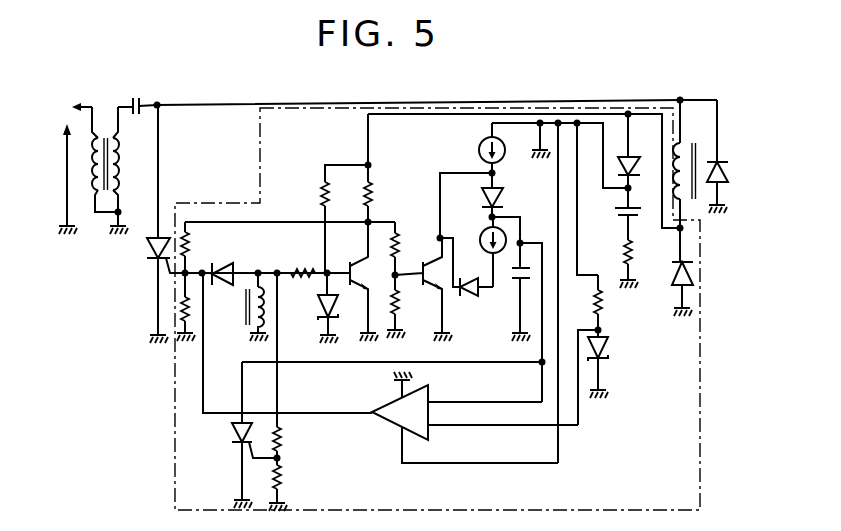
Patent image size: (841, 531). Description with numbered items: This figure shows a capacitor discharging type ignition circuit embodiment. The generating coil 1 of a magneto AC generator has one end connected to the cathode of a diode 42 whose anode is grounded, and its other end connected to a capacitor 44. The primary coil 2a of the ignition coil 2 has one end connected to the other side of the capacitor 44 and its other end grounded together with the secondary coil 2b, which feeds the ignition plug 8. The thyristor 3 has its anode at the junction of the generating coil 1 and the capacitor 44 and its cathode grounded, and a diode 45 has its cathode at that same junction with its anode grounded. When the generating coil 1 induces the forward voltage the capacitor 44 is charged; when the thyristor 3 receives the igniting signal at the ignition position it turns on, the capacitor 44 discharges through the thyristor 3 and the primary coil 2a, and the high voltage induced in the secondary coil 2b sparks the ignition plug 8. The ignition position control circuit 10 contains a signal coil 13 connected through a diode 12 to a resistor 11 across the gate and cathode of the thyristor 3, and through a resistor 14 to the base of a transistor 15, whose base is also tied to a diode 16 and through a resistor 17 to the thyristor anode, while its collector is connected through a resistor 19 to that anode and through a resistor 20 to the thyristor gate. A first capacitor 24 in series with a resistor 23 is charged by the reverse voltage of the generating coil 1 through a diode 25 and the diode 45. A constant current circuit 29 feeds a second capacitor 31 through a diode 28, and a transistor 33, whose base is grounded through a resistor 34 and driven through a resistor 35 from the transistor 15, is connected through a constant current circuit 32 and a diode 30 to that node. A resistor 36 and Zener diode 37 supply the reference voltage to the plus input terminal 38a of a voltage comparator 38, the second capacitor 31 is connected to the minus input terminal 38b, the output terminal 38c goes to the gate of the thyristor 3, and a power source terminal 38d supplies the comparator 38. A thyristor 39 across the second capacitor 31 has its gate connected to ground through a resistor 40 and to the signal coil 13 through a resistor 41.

The generating coil 1 is at (687, 145).
The ignition coil 2 is at (105, 124).
The primary coil 2a is at (118, 170).
The secondary coil 2b is at (95, 175).
The thyristor 3 is at (150, 250).
The ignition plug 8 is at (63, 113).
The ignition position control circuit 10 is at (701, 452).
The resistor 11 is at (178, 308).
The diode 12 is at (234, 265).
The signal coil 13 is at (253, 330).
The resistor 14 is at (298, 268).
The NPN transistor 15 is at (352, 281).
The diode 16 is at (319, 310).
The resistor 17 is at (320, 200).
The resistor 19 is at (375, 193).
The resistor 20 is at (189, 242).
The resistor 23 is at (637, 252).
The first capacitor 24 is at (615, 212).
The diode 25 is at (637, 155).
The diode 28 is at (505, 192).
The constant current circuit 29 is at (479, 146).
The diode 30 is at (473, 278).
The second capacitor 31 is at (514, 282).
The constant current circuit 32 is at (482, 230).
The NPN transistor 33 is at (445, 298).
The resistor 34 is at (400, 302).
The resistor 35 is at (403, 247).
The resistor 36 is at (605, 307).
The Zener diode 37 is at (609, 357).
The voltage comparator 38 is at (392, 413).
The plus input terminal 38a is at (453, 427).
The minus input terminal 38b is at (462, 398).
The output terminal 38c is at (307, 417).
The power source terminal 38d is at (400, 455).
The thyristor 39 is at (235, 438).
The resistor 40 is at (287, 477).
The resistor 41 is at (287, 448).
The diode 42 is at (693, 275).
The capacitor 44 is at (141, 97).
The diode 45 is at (728, 176).